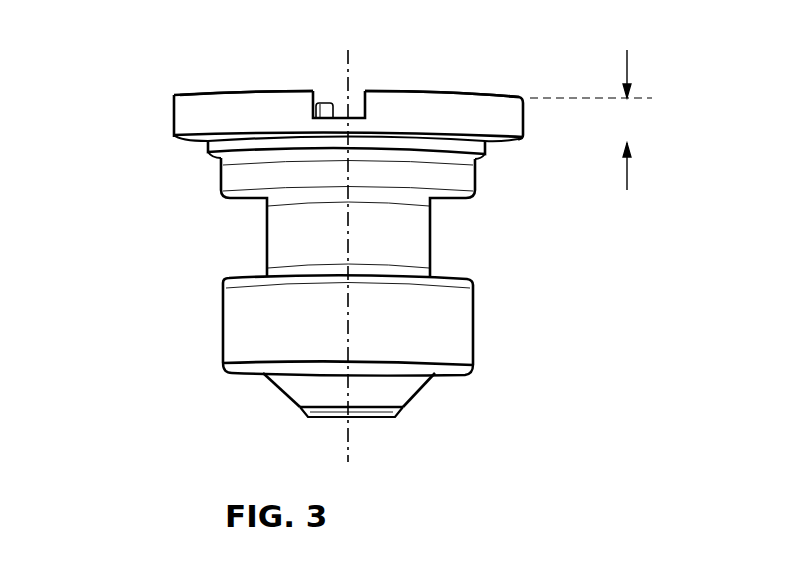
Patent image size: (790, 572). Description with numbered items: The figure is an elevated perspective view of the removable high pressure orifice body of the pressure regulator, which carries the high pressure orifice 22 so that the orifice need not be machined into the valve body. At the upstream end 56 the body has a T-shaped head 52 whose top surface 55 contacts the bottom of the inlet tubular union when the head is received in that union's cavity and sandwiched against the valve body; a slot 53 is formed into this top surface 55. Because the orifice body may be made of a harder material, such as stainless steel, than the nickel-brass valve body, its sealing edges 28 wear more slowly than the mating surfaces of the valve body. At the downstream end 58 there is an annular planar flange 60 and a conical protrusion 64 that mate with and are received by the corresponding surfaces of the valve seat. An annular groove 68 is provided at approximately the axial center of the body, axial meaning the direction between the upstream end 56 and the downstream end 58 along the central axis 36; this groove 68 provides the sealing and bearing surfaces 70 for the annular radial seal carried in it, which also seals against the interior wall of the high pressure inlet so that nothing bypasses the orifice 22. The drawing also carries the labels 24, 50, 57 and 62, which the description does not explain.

The high pressure orifice 22 is at (670, 103).
The valve member 24 is at (159, 70).
The sealing edges 28 is at (172, 133).
The central axis 36 is at (349, 61).
The head height dimension 50 is at (627, 62).
The T-shaped head 52 is at (184, 122).
The slot 53 is at (318, 101).
The top surface 55 is at (213, 91).
The upstream end 56 is at (493, 89).
The underside flange 57 is at (198, 141).
The downstream end 58 is at (386, 428).
The annular planar flange 60 is at (243, 380).
The tip 62 is at (323, 419).
The conical protrusion 64 is at (292, 408).
The annular groove 68 is at (455, 261).
The sealing and bearing surfaces 70 is at (267, 240).